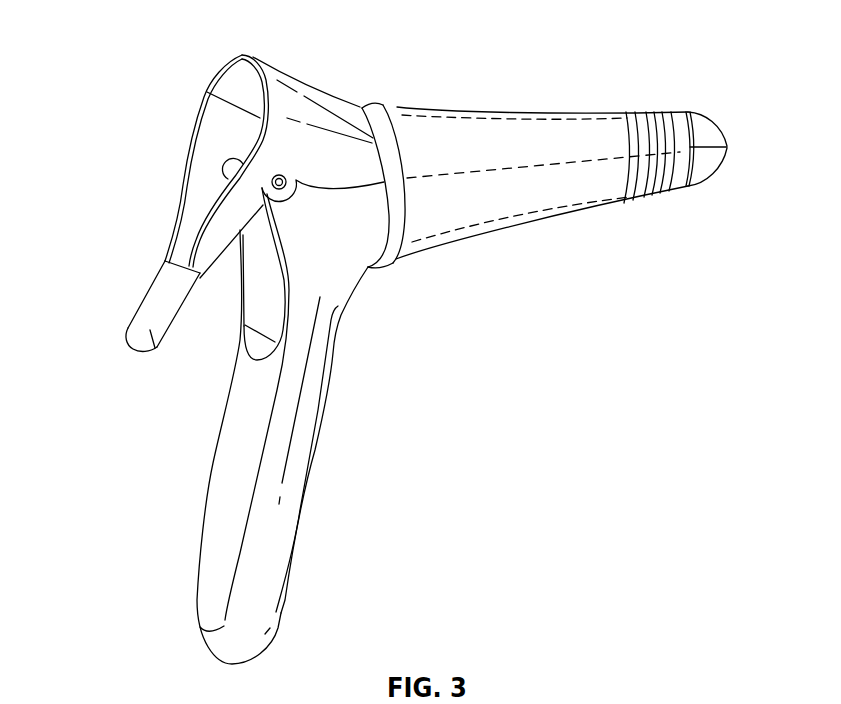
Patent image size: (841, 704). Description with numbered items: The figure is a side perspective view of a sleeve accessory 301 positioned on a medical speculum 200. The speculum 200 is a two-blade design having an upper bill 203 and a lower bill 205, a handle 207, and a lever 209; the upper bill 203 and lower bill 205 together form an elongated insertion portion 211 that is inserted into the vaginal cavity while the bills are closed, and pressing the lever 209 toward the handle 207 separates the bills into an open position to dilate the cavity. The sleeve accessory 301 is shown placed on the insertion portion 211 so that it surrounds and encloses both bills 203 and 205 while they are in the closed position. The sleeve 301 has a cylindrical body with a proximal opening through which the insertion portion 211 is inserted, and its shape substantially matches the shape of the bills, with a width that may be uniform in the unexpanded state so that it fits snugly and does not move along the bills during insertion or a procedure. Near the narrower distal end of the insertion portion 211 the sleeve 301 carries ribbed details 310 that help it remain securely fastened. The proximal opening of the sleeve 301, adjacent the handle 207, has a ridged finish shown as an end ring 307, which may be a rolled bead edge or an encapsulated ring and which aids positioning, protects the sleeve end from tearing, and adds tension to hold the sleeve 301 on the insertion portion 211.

The speculum 200 is at (133, 36).
The upper bill 203 is at (585, 122).
The lower bill 205 is at (571, 203).
The handle 207 is at (212, 607).
The lever 209 is at (147, 313).
The elongated insertion portion 211 is at (470, 102).
The sleeve accessory 301 is at (467, 240).
The end ring 307 is at (373, 107).
The ribbed details 310 is at (669, 109).